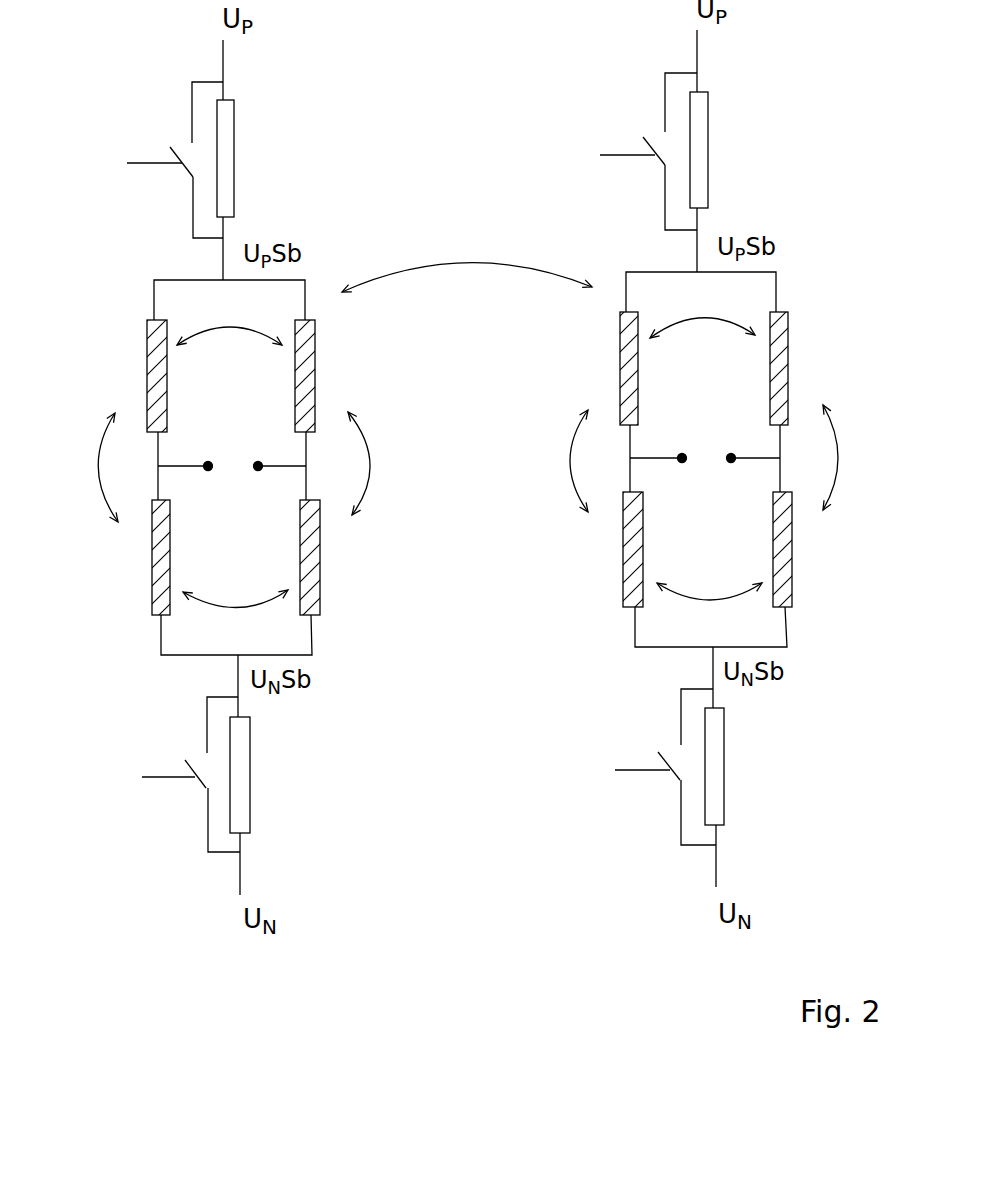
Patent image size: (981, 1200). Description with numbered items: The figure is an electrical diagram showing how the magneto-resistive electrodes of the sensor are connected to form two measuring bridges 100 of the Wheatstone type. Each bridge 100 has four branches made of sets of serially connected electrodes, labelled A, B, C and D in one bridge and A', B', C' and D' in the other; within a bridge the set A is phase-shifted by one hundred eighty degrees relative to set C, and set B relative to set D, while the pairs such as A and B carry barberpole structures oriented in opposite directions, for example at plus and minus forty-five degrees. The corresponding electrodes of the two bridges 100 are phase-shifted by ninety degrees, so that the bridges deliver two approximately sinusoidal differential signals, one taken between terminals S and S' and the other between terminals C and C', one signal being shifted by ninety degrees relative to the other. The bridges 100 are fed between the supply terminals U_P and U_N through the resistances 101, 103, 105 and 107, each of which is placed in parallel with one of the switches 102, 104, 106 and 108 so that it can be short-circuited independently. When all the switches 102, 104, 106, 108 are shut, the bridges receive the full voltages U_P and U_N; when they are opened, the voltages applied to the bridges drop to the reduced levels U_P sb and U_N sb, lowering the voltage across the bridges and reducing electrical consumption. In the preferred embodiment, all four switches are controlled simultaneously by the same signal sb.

The measuring bridge 100 is at (115, 668).
The resistance 101 is at (235, 160).
The switch 102 is at (188, 177).
The resistance 103 is at (250, 772).
The switch 104 is at (202, 792).
The resistance 105 is at (710, 152).
The switch 106 is at (663, 165).
The resistance 107 is at (723, 763).
The switch 108 is at (677, 783).